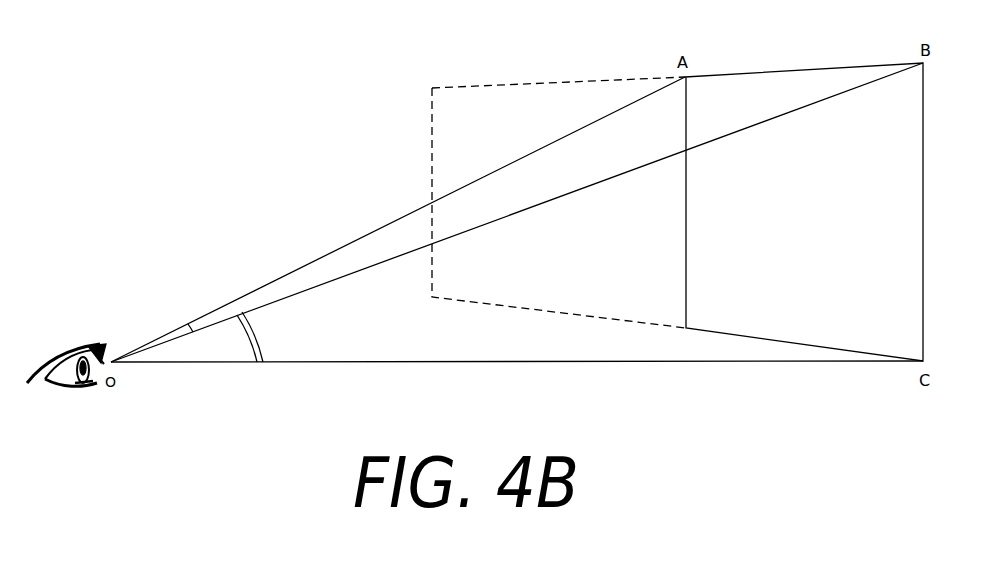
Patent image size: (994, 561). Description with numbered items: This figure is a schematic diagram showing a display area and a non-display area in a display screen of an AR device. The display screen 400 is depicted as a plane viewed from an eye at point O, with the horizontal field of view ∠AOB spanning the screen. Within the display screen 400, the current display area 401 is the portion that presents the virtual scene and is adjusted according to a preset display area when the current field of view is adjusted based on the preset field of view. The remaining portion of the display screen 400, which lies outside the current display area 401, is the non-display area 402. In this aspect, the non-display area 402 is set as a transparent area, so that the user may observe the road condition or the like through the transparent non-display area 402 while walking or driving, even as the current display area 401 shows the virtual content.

The display screen 400 is at (432, 113).
The current display area 401 is at (768, 92).
The non-display area 402 is at (543, 90).